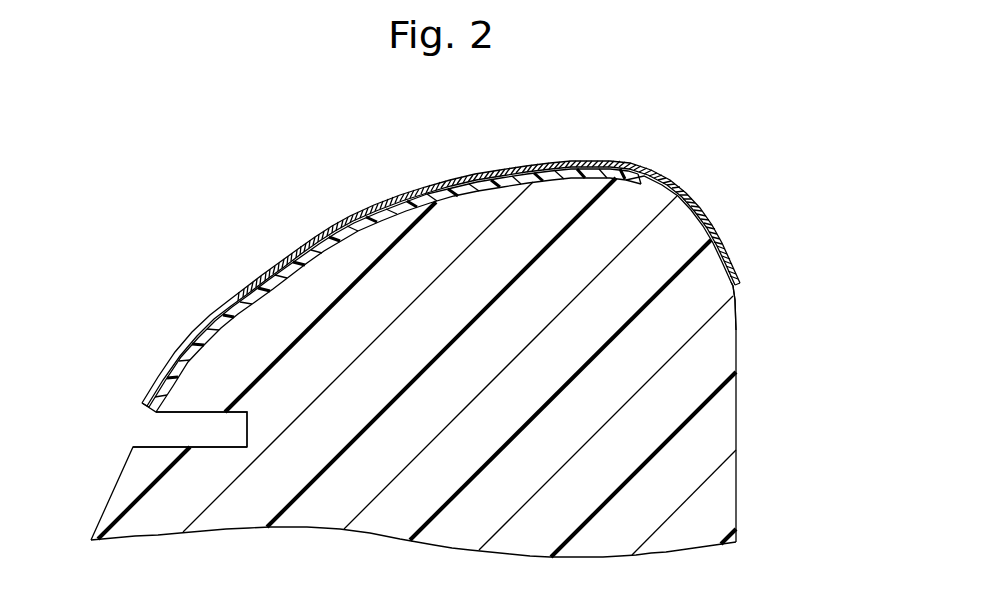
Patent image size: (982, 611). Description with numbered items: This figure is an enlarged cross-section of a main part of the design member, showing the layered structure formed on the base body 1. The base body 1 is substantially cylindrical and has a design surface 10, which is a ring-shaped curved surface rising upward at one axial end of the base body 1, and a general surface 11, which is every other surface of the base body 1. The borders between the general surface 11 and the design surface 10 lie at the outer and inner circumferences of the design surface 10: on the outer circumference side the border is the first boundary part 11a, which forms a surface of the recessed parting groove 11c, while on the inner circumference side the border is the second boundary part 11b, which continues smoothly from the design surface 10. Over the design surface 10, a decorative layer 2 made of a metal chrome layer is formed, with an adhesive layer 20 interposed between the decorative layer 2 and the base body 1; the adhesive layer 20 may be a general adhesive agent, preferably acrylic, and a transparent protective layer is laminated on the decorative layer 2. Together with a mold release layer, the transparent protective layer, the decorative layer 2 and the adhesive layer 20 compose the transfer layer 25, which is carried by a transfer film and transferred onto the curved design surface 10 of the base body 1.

The base body 1 is at (727, 387).
The decorative layer 2 is at (494, 170).
The design surface 10 is at (249, 278).
The general surface 11 is at (117, 478).
The first boundary part 11a is at (157, 446).
The second boundary part 11b is at (732, 290).
The parting groove 11c is at (190, 441).
The adhesive layer 20 is at (578, 163).
The transfer layer 25 is at (650, 166).